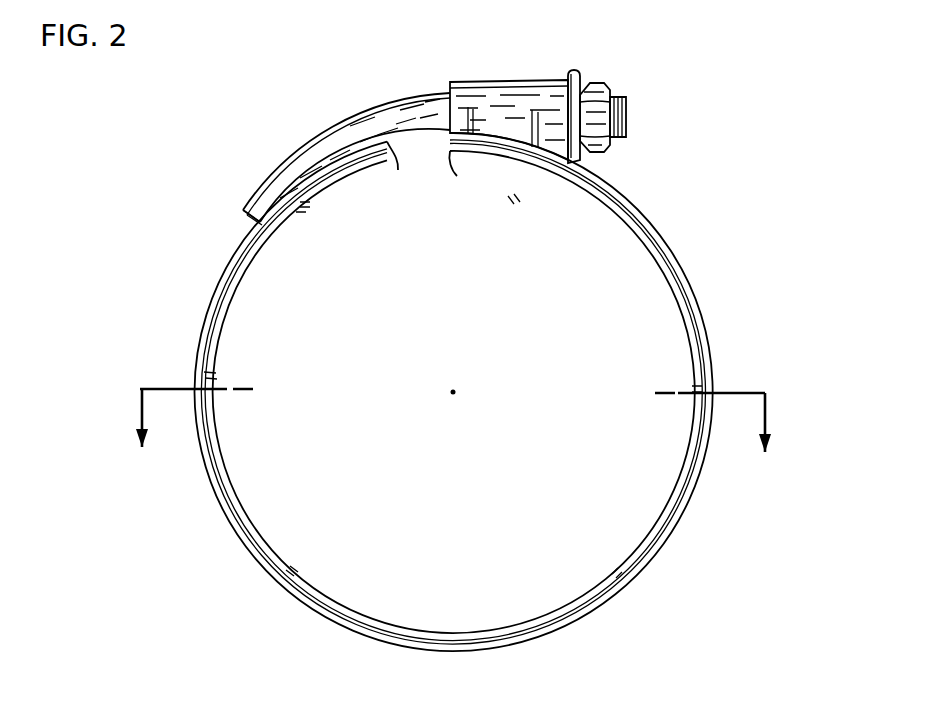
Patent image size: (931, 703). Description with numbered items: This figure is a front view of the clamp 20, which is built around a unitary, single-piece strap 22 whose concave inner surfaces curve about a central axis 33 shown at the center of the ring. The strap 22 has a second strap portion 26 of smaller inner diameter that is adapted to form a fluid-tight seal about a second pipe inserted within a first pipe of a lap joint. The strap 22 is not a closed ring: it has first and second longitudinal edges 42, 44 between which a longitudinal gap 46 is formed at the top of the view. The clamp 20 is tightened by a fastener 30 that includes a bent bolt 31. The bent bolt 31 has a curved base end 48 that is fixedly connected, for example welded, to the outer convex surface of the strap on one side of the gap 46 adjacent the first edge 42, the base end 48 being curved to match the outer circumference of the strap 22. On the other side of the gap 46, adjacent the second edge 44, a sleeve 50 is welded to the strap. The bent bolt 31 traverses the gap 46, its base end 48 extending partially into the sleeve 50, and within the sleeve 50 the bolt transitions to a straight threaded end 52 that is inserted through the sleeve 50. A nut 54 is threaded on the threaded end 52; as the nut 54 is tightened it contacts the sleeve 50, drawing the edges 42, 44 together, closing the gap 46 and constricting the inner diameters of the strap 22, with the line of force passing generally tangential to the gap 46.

The clamp 20 is at (683, 191).
The strap 22 is at (697, 278).
The second strap portion 26 is at (591, 81).
The fastener 30 is at (393, 100).
The bent bolt 31 is at (348, 138).
The central axis 33 is at (458, 389).
The first longitudinal edge 42 is at (398, 170).
The second longitudinal edge 44 is at (457, 176).
The longitudinal gap 46 is at (420, 157).
The base end 48 is at (280, 185).
The sleeve 50 is at (507, 87).
The threaded end 52 is at (625, 107).
The nut 54 is at (602, 87).